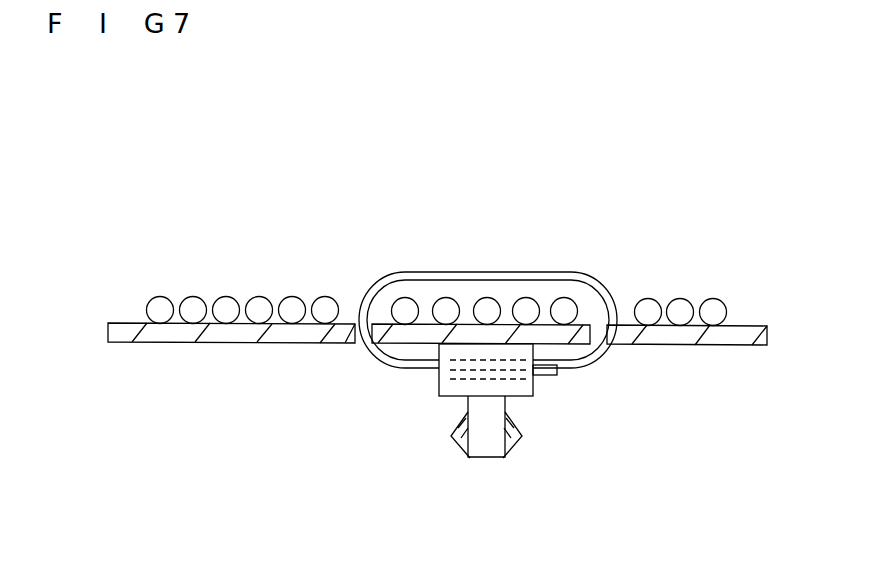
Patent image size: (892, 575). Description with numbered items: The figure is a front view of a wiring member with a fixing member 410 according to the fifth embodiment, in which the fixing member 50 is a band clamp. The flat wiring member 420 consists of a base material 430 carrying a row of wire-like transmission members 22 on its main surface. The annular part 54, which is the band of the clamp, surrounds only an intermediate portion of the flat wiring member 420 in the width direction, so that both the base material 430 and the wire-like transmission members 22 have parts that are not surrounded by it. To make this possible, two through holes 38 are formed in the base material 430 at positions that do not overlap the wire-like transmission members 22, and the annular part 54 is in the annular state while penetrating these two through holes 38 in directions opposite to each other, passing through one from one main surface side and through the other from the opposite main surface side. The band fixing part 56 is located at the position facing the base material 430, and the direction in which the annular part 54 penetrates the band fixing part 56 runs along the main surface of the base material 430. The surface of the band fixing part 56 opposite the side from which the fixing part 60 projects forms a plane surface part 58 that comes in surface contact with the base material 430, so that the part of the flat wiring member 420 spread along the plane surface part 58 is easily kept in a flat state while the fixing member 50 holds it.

The wiring member with a fixing member 410 is at (189, 171).
The annular part 54 is at (498, 273).
The flat wiring member 420 is at (765, 251).
The wire-like transmission members 22 is at (712, 302).
The base material 430 is at (742, 333).
The through hole 38 is at (356, 343).
The plane surface part 58 is at (456, 341).
The band fixing part 56 is at (537, 392).
The fixing part 60 is at (498, 452).
The fixing member 50 is at (467, 459).